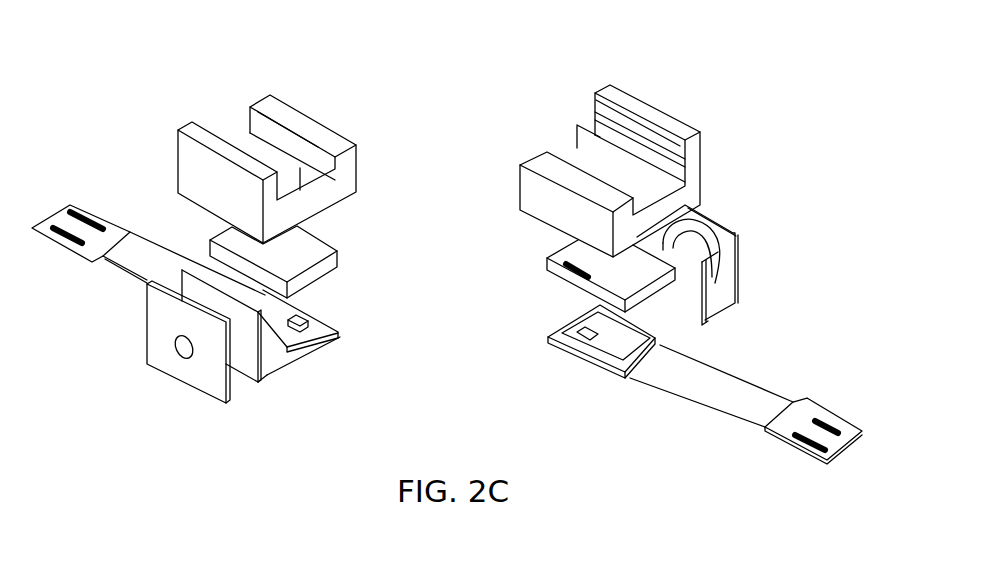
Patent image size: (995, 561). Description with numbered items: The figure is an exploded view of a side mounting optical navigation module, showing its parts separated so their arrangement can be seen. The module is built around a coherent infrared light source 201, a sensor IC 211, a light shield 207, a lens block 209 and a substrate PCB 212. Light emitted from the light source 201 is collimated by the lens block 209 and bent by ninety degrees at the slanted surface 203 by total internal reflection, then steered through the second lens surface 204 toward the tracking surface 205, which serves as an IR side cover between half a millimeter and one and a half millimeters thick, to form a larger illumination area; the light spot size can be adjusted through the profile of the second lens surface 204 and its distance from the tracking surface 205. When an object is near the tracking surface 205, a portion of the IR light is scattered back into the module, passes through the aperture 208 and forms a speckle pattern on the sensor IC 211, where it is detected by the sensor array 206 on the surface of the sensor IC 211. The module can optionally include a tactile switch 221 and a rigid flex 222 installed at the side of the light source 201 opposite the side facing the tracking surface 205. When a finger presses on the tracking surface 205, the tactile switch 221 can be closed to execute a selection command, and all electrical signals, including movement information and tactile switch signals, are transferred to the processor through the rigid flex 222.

The coherent infrared light source 201 is at (660, 333).
The slanted surface 203 is at (293, 173).
The second lens surface 204 is at (615, 150).
The tracking surface 205 is at (545, 193).
The sensor array 206 is at (565, 332).
The light shield 207 is at (582, 253).
The aperture 208 is at (557, 271).
The lens block 209 is at (548, 158).
The sensor IC 211 is at (292, 333).
The substrate PCB 212 is at (283, 357).
The tactile switch 221 is at (176, 353).
The rigid flex 222 is at (127, 253).